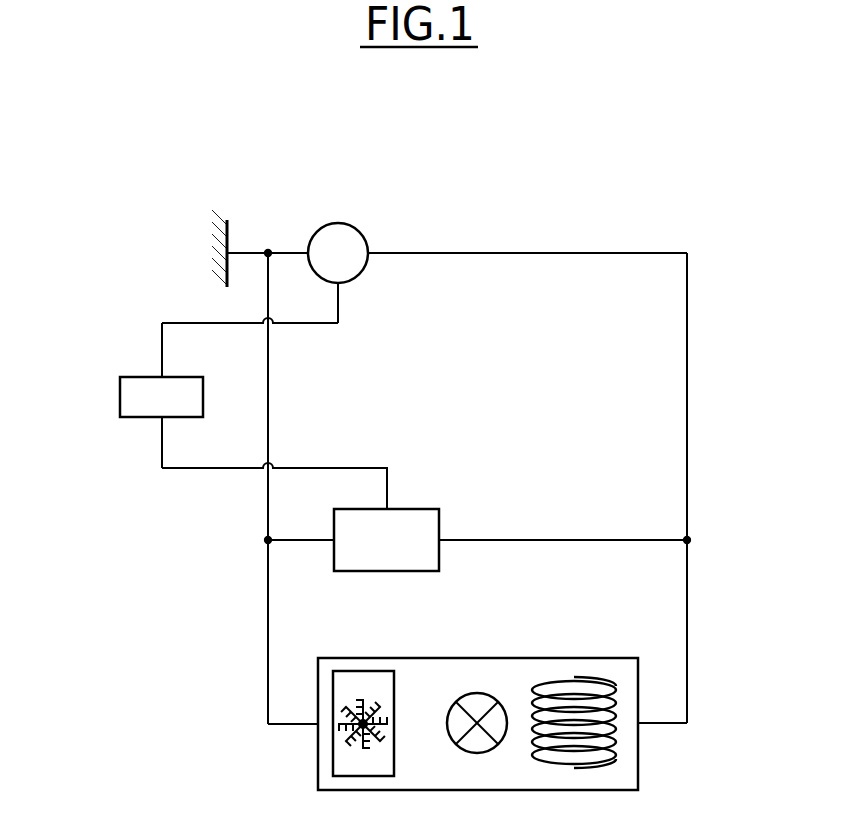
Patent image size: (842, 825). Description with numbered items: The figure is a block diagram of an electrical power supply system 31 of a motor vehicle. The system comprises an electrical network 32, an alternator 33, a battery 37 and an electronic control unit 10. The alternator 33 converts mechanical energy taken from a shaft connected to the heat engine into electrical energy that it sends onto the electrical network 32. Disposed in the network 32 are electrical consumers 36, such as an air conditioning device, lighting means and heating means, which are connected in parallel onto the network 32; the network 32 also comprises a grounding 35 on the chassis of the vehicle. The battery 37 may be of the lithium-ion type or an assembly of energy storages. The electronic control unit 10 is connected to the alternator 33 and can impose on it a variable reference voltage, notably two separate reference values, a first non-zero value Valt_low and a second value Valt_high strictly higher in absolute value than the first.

The electronic control unit 10 is at (118, 397).
The electrical power supply system 31 is at (665, 214).
The electrical network 32 is at (687, 288).
The alternator 33 is at (341, 223).
The grounding 35 is at (230, 232).
The electrical consumers 36 is at (479, 658).
The battery 37 is at (477, 540).